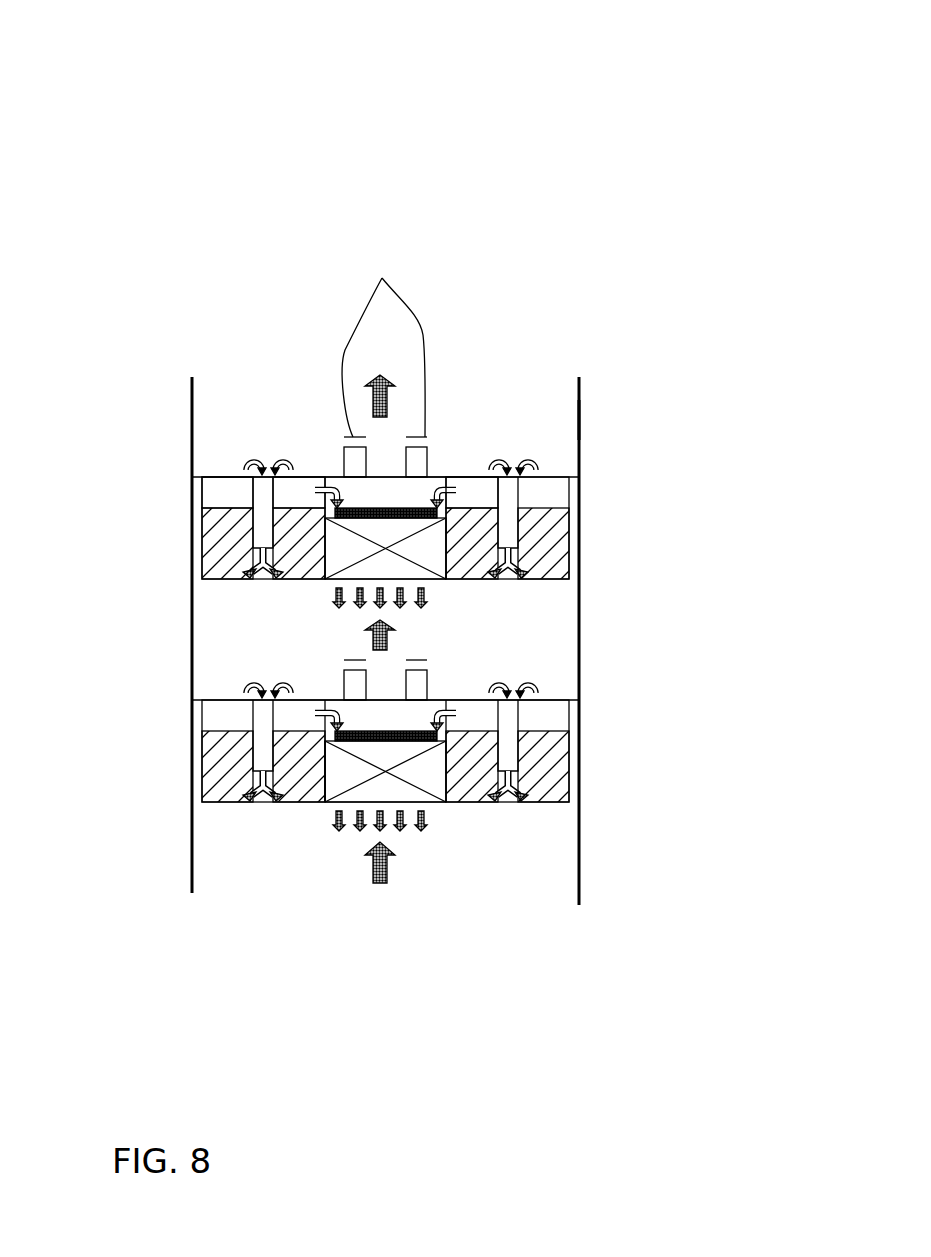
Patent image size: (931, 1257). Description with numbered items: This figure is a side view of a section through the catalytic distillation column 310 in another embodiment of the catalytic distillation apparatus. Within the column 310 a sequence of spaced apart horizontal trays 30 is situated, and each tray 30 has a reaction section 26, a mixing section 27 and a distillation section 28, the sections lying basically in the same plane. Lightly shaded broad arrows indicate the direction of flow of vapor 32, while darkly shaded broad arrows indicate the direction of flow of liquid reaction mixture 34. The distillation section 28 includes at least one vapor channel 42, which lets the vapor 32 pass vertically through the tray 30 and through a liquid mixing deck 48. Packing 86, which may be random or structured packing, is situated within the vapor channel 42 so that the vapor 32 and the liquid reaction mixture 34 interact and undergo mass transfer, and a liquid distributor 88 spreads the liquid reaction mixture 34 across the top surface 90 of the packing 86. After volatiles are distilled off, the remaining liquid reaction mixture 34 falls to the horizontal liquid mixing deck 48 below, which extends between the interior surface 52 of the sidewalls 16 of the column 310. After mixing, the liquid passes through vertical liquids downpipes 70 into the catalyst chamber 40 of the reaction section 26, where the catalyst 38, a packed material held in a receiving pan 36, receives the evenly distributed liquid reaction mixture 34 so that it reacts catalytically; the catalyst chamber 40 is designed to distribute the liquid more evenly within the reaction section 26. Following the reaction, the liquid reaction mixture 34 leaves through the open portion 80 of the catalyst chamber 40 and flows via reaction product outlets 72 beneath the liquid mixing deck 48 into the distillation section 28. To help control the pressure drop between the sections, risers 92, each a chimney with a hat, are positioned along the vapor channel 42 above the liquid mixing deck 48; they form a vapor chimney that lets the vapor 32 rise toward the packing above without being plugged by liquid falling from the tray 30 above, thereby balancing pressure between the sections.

The catalytic distillation column 310 is at (200, 175).
The sidewalls 16 is at (583, 460).
The reaction section 26 is at (543, 780).
The mixing section 27 is at (550, 468).
The distillation section 28 is at (382, 760).
The tray 30 is at (605, 513).
The vapor 32 is at (380, 887).
The liquid reaction mixture 34 is at (273, 800).
The receiving pan 36 is at (262, 800).
The catalyst 38 is at (242, 538).
The catalyst chamber 40 is at (222, 500).
The vapor channel 42 is at (422, 883).
The liquid mixing deck 48 is at (303, 482).
The interior surface 52 is at (585, 420).
The liquids downpipes 70 is at (503, 497).
The reaction product outlets 72 is at (363, 500).
The open portion 80 is at (483, 497).
The packing 86 is at (342, 760).
The liquid distributor 88 is at (362, 733).
The top surface 90 is at (443, 740).
The risers 92 is at (383, 332).